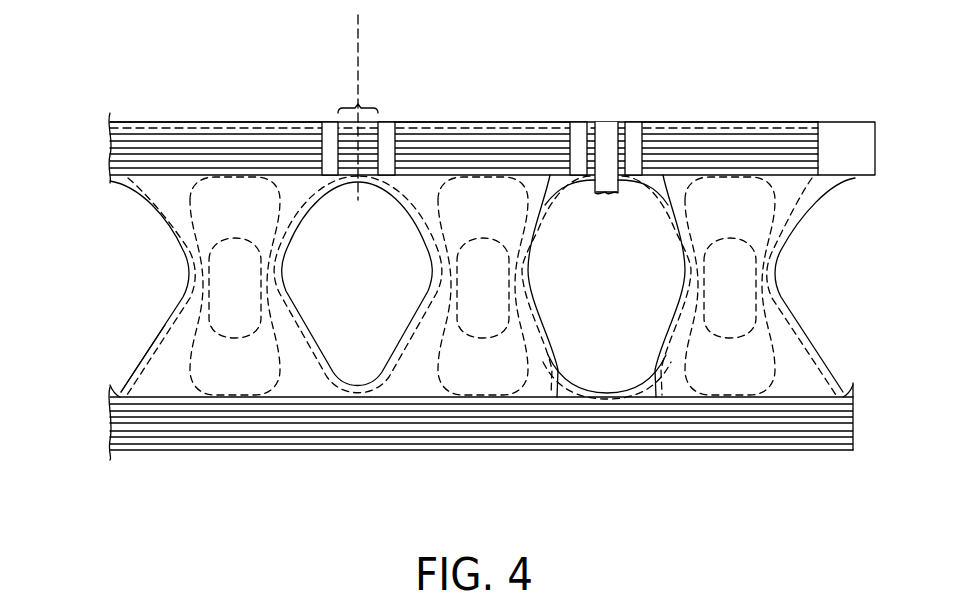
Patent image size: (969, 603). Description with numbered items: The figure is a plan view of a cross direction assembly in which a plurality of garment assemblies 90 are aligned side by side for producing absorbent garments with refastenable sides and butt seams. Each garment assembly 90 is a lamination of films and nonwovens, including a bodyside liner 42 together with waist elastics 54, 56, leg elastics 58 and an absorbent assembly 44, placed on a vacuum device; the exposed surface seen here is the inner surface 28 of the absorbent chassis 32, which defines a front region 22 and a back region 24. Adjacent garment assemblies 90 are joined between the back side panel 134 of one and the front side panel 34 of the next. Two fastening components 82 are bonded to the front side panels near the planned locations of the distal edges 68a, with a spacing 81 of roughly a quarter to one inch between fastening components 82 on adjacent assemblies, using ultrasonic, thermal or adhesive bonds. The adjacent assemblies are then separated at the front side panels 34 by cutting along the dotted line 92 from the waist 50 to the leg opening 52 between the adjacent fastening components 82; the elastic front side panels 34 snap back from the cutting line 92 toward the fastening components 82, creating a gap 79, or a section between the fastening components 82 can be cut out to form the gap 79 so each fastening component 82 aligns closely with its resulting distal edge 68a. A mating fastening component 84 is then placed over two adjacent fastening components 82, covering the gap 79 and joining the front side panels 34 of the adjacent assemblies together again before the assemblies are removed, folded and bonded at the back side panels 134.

The front region 22 is at (238, 135).
The back region 24 is at (538, 438).
The inner surface 28 is at (160, 352).
The absorbent chassis 32 is at (170, 275).
The front side panel 34 is at (552, 180).
The bodyside liner 42 is at (288, 333).
The absorbent assembly 44 is at (456, 275).
The waist 50 is at (130, 120).
The leg opening 52 is at (357, 284).
The waist elastic 54 is at (183, 155).
The waist elastic (rear elastic band) 56 is at (235, 452).
The leg elastics 58 is at (173, 223).
The distal edge 68a is at (577, 126).
The gap 79 is at (608, 195).
The spacing 81 is at (358, 107).
The fastening component 82 is at (328, 126).
The mating fastening component 84 is at (828, 135).
The garment assembly 90 is at (195, 106).
The dotted line (cutting line) 92 is at (361, 198).
The back side panel 134 is at (568, 380).